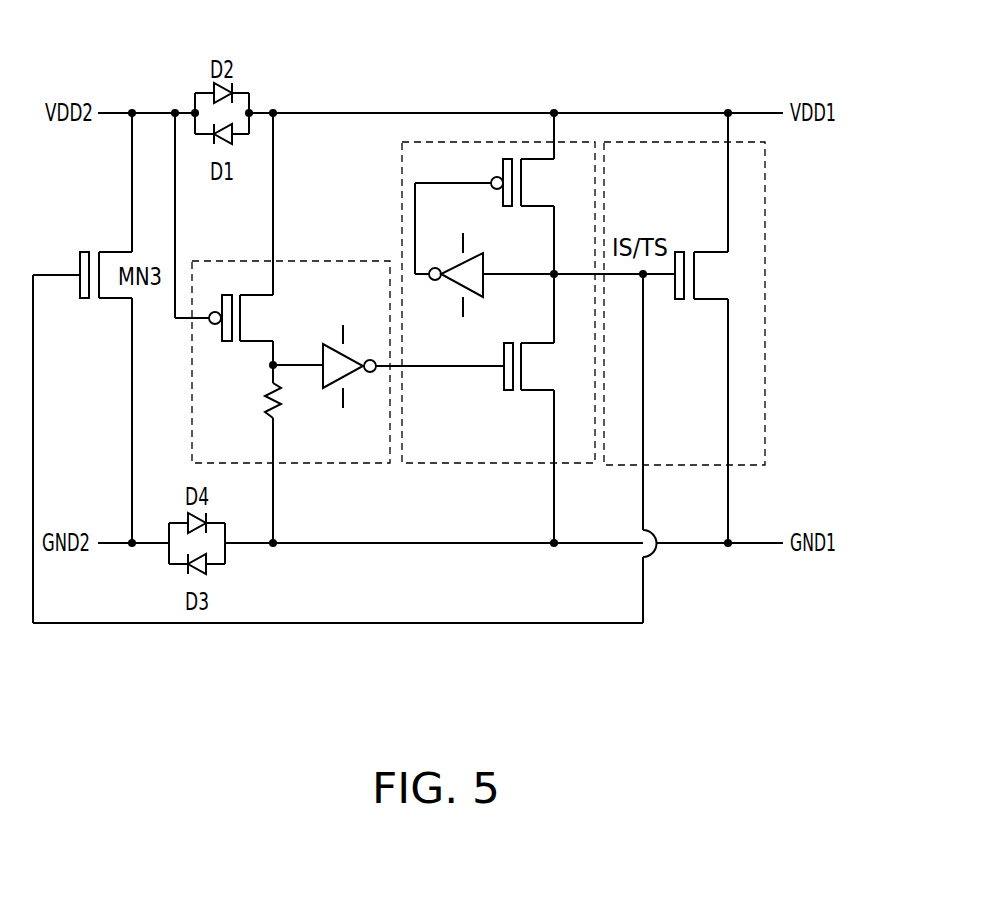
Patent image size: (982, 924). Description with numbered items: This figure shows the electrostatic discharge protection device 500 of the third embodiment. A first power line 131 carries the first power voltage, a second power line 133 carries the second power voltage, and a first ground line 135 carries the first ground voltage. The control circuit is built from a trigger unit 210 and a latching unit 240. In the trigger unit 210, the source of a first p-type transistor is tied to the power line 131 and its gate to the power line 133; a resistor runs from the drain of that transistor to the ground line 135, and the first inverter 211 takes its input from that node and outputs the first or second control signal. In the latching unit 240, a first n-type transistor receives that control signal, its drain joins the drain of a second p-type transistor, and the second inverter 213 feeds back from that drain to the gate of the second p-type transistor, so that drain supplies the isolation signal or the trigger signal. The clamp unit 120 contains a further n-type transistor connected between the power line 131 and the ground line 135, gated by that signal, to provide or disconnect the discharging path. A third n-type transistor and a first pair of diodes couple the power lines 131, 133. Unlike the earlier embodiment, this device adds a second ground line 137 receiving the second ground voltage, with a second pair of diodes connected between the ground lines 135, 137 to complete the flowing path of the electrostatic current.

The power line 133 is at (157, 112).
The power line 131 is at (520, 112).
The ground line 135 is at (520, 546).
The ground line 137 is at (157, 548).
The trigger unit 210 is at (339, 328).
The inverter 211 is at (352, 358).
The inverter 213 is at (507, 250).
The latching unit 240 is at (538, 328).
The clamp unit 120 is at (627, 470).
The electrostatic discharge protection device 500 is at (812, 678).